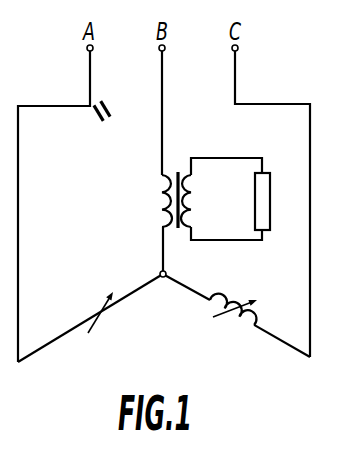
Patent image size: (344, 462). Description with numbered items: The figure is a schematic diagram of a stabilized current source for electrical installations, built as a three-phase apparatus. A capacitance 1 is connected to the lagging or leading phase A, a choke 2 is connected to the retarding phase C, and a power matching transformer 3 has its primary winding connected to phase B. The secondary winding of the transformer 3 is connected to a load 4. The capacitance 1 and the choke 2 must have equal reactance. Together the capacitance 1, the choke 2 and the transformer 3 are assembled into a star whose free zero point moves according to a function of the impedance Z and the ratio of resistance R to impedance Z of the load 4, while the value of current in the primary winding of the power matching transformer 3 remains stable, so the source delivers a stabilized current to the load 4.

The capacitance 1 is at (106, 321).
The choke 2 is at (231, 318).
The power matching transformer 3 is at (172, 176).
The load 4 is at (262, 210).